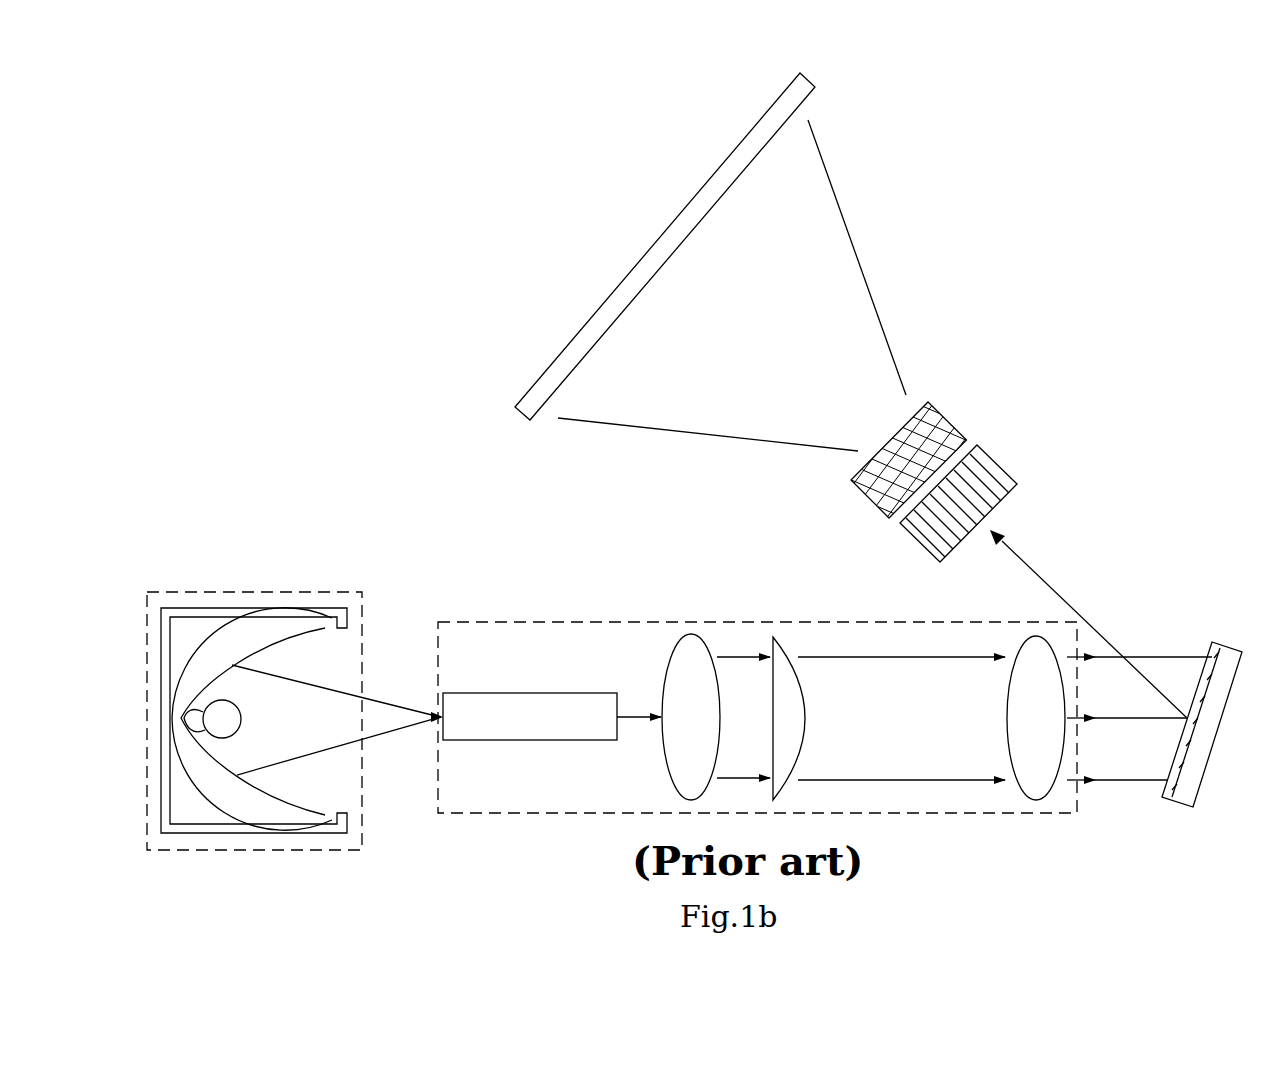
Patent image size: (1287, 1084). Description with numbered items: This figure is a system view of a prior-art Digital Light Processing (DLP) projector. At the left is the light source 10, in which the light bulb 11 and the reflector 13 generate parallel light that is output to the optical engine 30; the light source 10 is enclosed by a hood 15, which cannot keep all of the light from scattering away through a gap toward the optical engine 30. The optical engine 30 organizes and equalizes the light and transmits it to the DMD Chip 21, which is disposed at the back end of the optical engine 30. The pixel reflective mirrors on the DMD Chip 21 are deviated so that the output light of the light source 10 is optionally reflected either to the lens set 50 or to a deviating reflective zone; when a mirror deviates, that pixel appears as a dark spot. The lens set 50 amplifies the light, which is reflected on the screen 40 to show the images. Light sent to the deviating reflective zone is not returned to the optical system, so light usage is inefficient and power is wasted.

The light source 10 is at (253, 592).
The light bulb 11 is at (225, 722).
The reflector 13 is at (210, 662).
The hood 15 is at (223, 610).
The DMD Chip 21 is at (1205, 732).
The optical engine 30 is at (707, 622).
The screen 40 is at (648, 262).
The lens set 50 is at (953, 420).